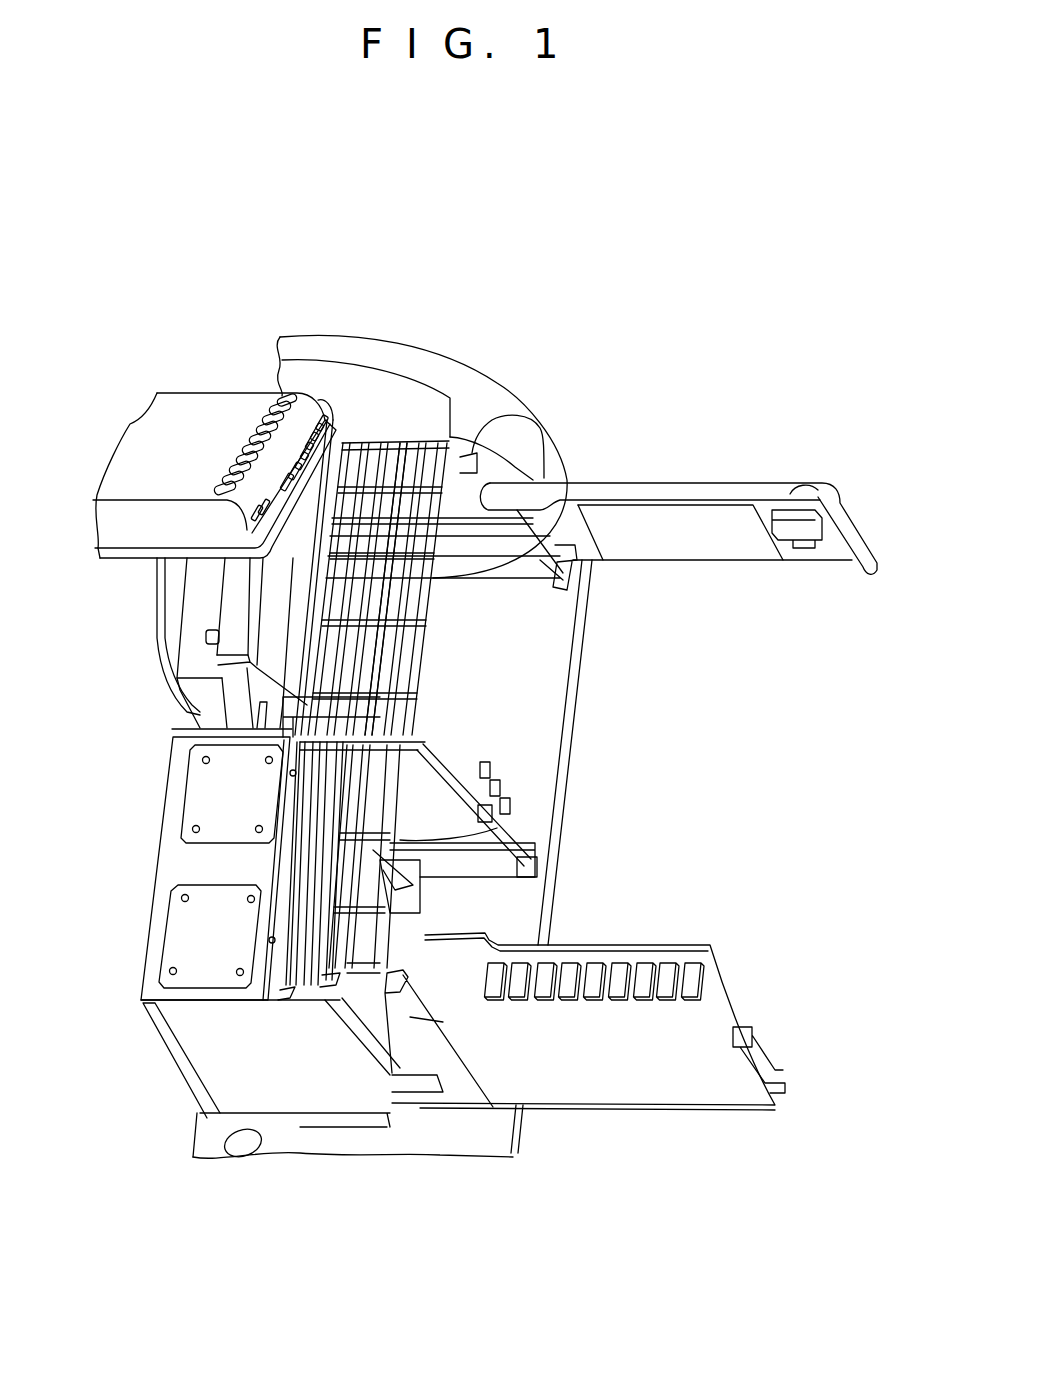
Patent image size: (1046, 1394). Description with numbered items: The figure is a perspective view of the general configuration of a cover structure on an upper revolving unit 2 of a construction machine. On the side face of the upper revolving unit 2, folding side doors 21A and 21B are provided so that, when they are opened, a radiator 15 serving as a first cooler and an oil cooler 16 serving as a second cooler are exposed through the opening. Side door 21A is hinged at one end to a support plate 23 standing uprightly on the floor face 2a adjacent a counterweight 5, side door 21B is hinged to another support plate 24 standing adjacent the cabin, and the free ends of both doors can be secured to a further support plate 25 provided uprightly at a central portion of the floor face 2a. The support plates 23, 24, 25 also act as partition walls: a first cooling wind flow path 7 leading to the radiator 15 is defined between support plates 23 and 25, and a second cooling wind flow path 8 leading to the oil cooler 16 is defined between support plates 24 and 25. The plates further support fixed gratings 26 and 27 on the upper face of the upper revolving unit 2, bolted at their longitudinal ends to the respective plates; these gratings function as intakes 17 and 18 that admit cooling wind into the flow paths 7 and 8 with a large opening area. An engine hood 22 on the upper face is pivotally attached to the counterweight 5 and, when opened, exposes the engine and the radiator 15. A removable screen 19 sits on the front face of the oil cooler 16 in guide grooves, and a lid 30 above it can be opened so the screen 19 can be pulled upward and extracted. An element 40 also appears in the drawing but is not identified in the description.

The upper revolving unit 2 is at (122, 710).
The floor face 2a is at (560, 608).
The counterweight 5 is at (378, 360).
The first cooling wind flow path 7 is at (452, 652).
The second cooling wind flow path 8 is at (408, 946).
The radiator 15 is at (300, 602).
The oil cooler 16 is at (297, 863).
The intake 17 is at (417, 600).
The intake 18 is at (497, 828).
The removable screen 19 is at (293, 1003).
The side door 21A is at (700, 483).
The side door 21B is at (718, 975).
The engine hood 22 is at (187, 407).
The support plate 23 is at (506, 416).
The support plate 24 is at (425, 935).
The support plate 25 is at (460, 762).
The fixed grating 26 is at (553, 577).
The fixed grating 27 is at (400, 897).
The lid 30 is at (362, 798).
The side panel 40 is at (167, 818).